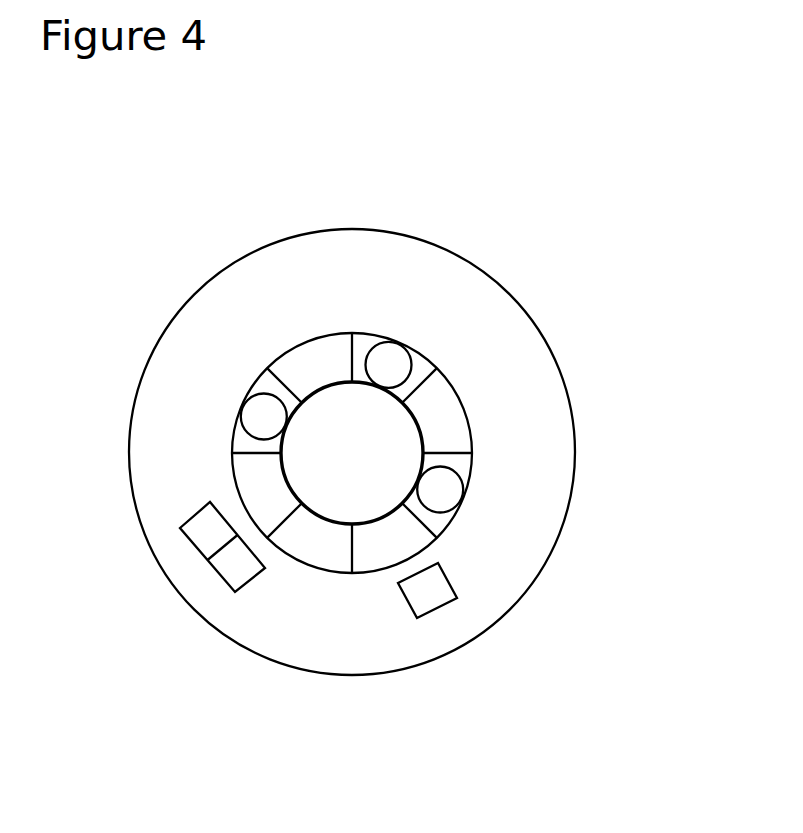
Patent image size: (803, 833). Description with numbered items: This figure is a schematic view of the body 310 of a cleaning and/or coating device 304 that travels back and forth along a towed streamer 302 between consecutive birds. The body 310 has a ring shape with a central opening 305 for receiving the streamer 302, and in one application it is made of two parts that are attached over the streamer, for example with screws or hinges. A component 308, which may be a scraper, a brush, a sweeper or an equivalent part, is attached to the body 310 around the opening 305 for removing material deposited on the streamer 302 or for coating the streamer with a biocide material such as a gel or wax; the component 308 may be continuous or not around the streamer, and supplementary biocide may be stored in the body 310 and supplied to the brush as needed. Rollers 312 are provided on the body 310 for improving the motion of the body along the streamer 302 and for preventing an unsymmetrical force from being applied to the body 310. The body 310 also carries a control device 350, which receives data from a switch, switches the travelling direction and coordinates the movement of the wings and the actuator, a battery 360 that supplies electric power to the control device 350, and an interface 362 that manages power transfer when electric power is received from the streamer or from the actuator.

The cleaning and/or coating device 304 is at (370, 182).
The body 310 is at (420, 298).
The component 308 is at (443, 422).
The streamer 302 is at (347, 450).
The rollers 312 is at (263, 418).
The opening 305 is at (313, 547).
The control device 350 is at (425, 595).
The battery 360 is at (237, 560).
The interface 362 is at (207, 532).